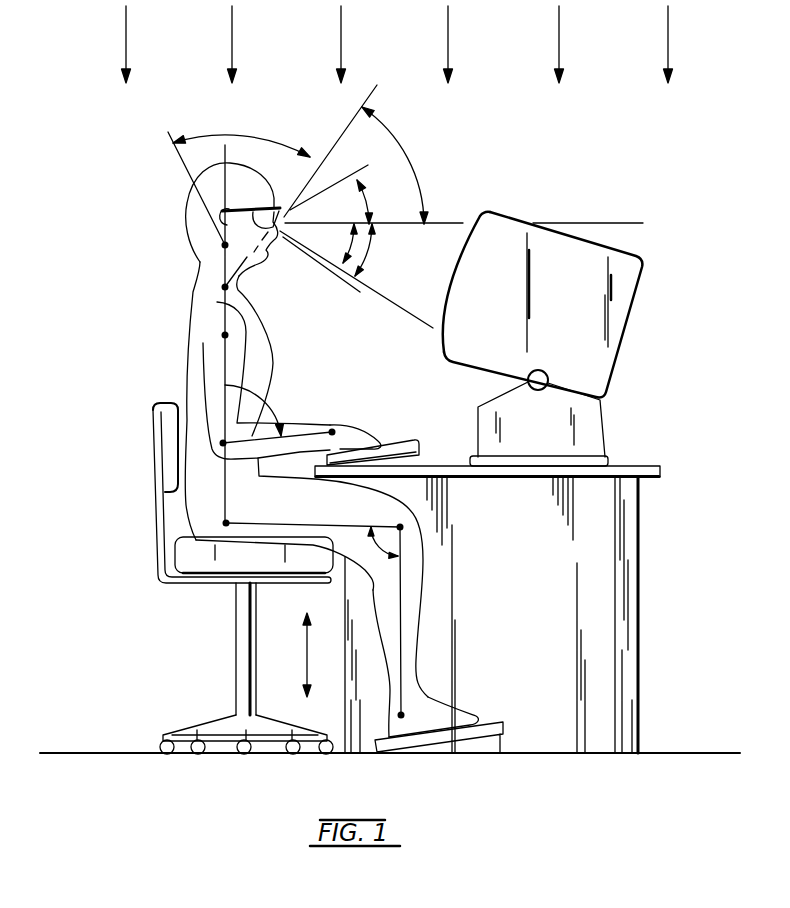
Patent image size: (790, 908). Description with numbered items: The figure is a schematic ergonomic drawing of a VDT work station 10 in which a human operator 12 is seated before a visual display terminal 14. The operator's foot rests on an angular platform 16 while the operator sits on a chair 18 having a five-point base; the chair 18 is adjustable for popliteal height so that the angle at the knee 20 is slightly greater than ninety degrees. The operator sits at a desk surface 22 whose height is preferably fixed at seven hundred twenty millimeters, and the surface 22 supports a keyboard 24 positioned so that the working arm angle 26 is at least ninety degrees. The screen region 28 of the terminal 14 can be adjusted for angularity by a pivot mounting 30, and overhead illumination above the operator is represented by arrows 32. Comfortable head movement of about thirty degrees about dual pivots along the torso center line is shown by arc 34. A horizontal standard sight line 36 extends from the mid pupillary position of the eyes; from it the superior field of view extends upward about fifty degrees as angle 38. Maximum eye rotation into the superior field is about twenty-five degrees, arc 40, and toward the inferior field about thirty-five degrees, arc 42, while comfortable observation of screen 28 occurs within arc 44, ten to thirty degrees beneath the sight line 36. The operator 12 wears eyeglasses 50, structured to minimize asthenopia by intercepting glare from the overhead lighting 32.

The work station 10 is at (140, 167).
The operator 12 is at (193, 305).
The visual display terminal 14 is at (627, 265).
The angular platform 16 is at (503, 725).
The chair 18 is at (242, 632).
The angle at the knee 20 is at (380, 547).
The desk surface 22 is at (620, 466).
The keyboard 24 is at (418, 445).
The arm angle 26 is at (278, 414).
The screen region 28 is at (456, 268).
The pivot mounting 30 is at (548, 376).
The overhead illumination arrows 32 is at (341, 36).
The arc of head movement 34 is at (267, 137).
The standard sight line 36 is at (592, 222).
The superior field of view angle 38 is at (411, 138).
The arc of maximum upward eye rotation 40 is at (371, 198).
The arc of maximum downward eye rotation 42 is at (369, 247).
The screen viewing arc 44 is at (359, 254).
The eyeglasses 50 is at (259, 202).